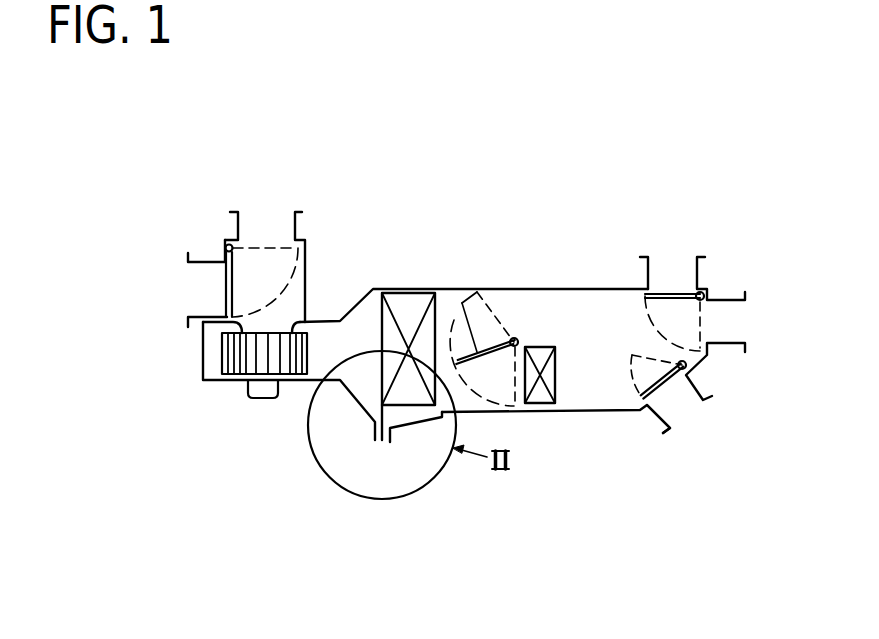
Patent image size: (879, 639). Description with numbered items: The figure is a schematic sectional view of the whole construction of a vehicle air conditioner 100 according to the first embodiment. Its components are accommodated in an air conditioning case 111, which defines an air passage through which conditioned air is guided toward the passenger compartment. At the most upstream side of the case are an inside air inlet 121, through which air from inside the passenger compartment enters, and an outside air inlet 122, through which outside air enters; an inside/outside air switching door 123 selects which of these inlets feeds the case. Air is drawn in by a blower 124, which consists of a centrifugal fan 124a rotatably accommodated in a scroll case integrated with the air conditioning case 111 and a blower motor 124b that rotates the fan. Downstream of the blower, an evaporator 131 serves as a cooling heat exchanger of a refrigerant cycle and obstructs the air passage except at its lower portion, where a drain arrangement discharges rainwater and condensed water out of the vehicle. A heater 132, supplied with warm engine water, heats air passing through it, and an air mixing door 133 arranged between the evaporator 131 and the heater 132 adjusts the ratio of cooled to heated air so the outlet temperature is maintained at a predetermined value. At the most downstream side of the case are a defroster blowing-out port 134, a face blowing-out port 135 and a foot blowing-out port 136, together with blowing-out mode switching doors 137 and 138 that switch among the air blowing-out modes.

The air conditioner 100 is at (530, 285).
The air conditioning case 111 is at (598, 288).
The inside air inlet 121 is at (190, 270).
The outside air inlet 122 is at (267, 212).
The inside/outside air switching door 123 is at (226, 288).
The blower 124 is at (242, 418).
The centrifugal fan 124a is at (248, 368).
The blower motor 124b is at (265, 416).
The evaporator 131 is at (410, 302).
The heater 132 is at (557, 388).
The air mixing door 133 is at (462, 303).
The defroster blowing-out port 134 is at (663, 263).
The face blowing-out port 135 is at (740, 324).
The foot blowing-out port 136 is at (693, 405).
The blowing-out mode switching door 137 is at (677, 292).
The blowing-out mode switching door 138 is at (655, 388).